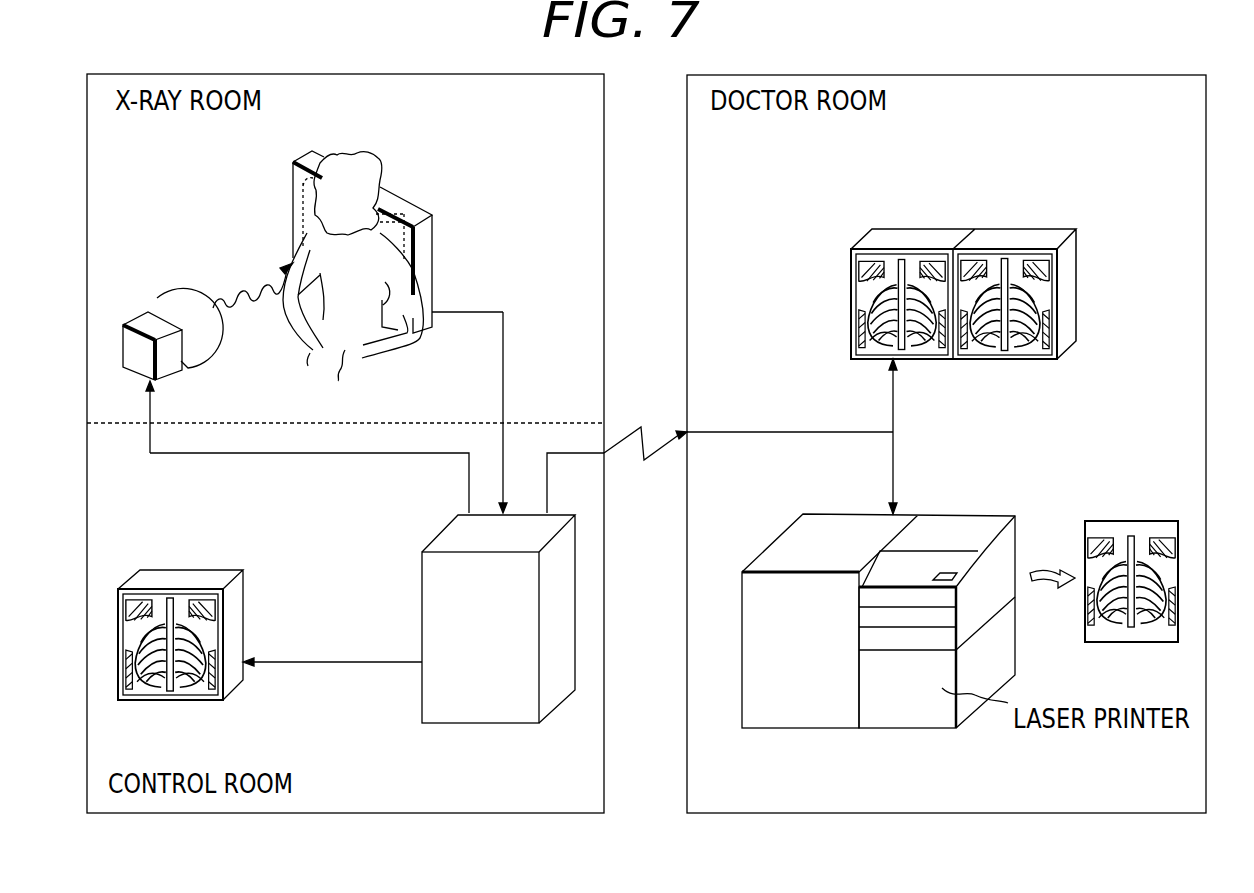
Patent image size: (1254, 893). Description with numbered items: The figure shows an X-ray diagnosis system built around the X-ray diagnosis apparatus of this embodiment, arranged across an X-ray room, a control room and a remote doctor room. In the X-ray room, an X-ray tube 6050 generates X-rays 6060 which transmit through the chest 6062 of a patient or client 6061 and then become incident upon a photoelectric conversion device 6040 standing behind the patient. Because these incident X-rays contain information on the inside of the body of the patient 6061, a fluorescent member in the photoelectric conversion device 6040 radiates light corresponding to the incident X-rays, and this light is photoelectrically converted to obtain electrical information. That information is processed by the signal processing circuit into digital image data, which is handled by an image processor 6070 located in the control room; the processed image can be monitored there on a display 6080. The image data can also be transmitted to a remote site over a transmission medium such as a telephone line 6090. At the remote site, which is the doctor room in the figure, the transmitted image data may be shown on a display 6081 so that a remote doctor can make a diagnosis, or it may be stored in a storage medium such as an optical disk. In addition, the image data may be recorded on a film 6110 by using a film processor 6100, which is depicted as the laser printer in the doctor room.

The photoelectric conversion device 6040 is at (432, 237).
The X-ray tube 6050 is at (143, 318).
The X-rays 6060 is at (245, 279).
The patient 6061 is at (370, 162).
The chest 6062 is at (337, 381).
The image processor 6070 is at (455, 712).
The display 6080 is at (183, 570).
The display 6081 is at (914, 229).
The telephone line 6090 is at (637, 425).
The film processor 6100 is at (765, 716).
The film 6110 is at (1138, 521).